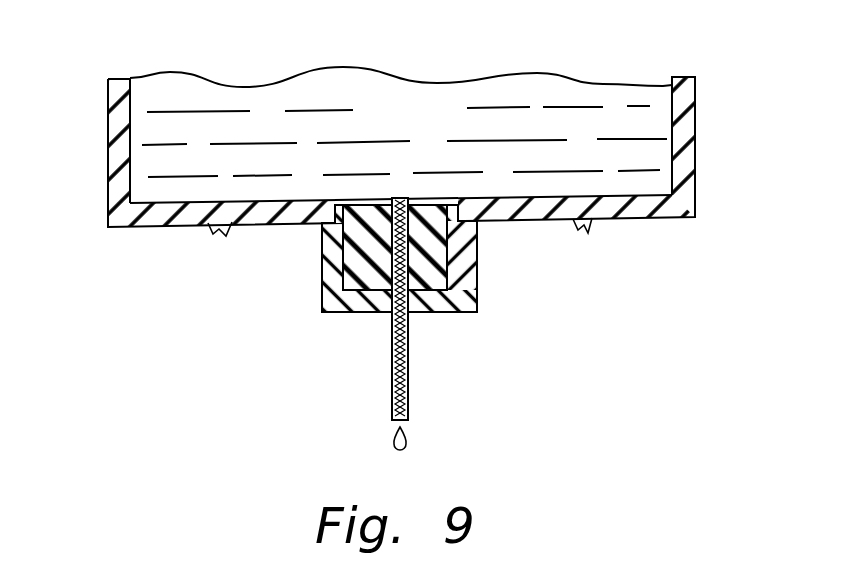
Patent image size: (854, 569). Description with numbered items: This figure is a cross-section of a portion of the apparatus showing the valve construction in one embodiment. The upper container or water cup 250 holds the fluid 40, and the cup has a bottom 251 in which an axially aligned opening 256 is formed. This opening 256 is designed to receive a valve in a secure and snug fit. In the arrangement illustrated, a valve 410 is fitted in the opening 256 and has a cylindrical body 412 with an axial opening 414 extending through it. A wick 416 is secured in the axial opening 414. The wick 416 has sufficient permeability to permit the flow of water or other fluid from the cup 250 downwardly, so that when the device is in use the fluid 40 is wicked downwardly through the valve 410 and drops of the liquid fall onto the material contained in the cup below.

The fluid 40 is at (430, 125).
The water cup 250 is at (415, 156).
The bottom 251 is at (160, 203).
The opening 256 is at (434, 230).
The valve 410 is at (341, 323).
The cylindrical body 412 is at (447, 263).
The axial opening 414 is at (410, 330).
The wick 416 is at (410, 387).